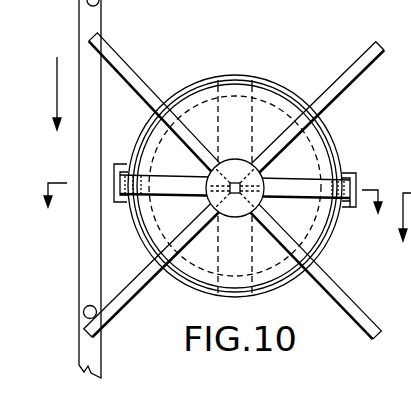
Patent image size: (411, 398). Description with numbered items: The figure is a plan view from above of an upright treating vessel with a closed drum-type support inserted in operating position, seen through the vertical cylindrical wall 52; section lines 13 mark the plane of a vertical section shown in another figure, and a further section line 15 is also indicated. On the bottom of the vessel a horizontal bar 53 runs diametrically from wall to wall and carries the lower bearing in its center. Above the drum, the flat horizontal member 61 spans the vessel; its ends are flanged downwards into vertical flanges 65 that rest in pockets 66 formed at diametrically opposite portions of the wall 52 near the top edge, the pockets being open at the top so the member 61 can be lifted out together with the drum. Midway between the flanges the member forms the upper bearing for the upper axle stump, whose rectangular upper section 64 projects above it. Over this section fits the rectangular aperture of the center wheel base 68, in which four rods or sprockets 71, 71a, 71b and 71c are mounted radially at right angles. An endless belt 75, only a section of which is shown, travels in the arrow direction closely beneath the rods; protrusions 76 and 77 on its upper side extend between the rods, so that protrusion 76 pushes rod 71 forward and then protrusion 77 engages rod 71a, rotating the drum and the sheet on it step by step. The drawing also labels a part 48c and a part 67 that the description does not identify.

The section lines 13 is at (214, 210).
The section lines 15 is at (402, 229).
The inner wall 48c is at (320, 155).
The vertical cylindrical wall 52 is at (206, 81).
The horizontal bar 53 is at (280, 92).
The flat horizontal member 61 is at (286, 186).
The rectangular upper section 64 is at (236, 159).
The vertical flanges 65 is at (350, 205).
The pockets 66 is at (357, 172).
The bar edge 67 is at (265, 198).
The center wheel base 68 is at (205, 200).
The rod or sprocket 71 is at (125, 298).
The rod or sprocket 71a is at (135, 78).
The rod or sprocket 71b is at (353, 76).
The rod or sprocket 71c is at (340, 295).
The endless belt 75 is at (82, 348).
The protrusion 76 is at (83, 311).
The protrusion 77 is at (88, 3).